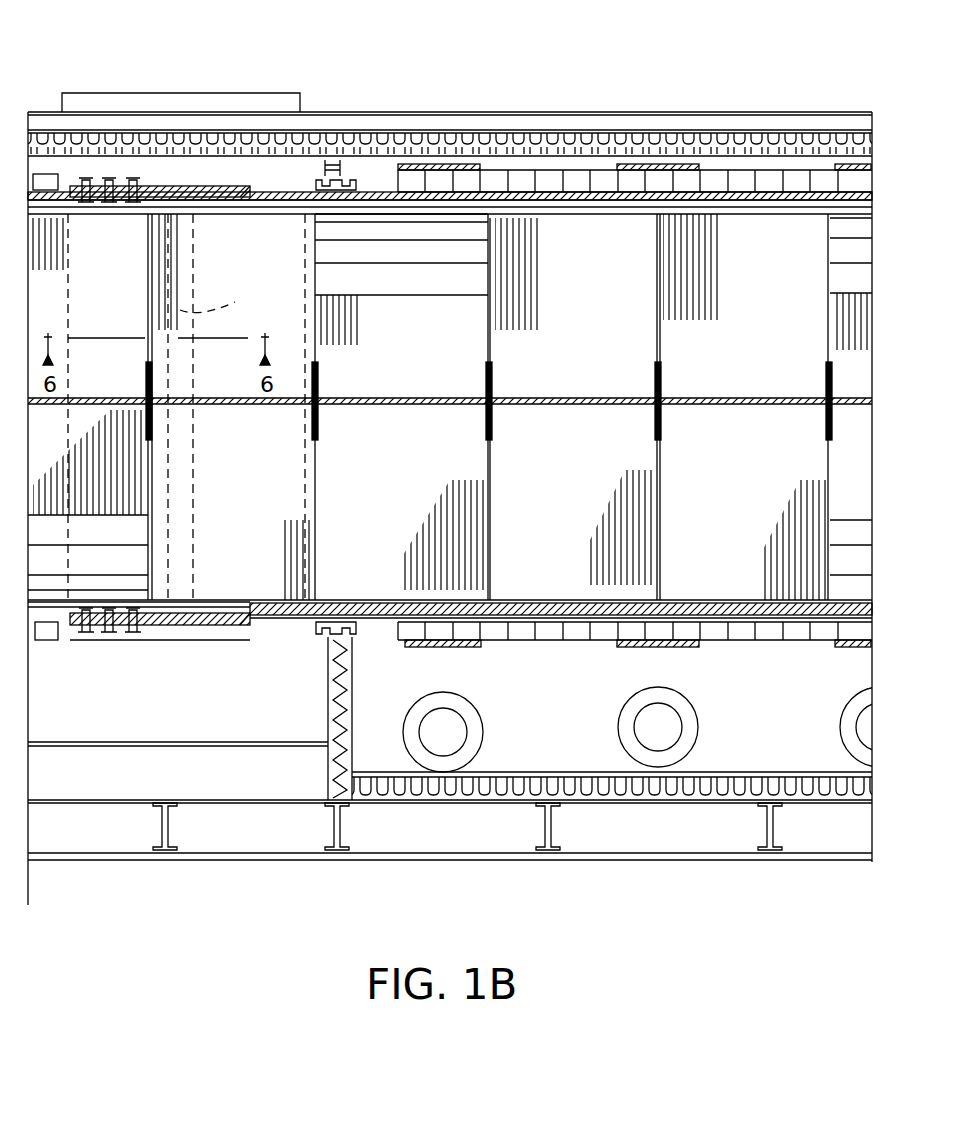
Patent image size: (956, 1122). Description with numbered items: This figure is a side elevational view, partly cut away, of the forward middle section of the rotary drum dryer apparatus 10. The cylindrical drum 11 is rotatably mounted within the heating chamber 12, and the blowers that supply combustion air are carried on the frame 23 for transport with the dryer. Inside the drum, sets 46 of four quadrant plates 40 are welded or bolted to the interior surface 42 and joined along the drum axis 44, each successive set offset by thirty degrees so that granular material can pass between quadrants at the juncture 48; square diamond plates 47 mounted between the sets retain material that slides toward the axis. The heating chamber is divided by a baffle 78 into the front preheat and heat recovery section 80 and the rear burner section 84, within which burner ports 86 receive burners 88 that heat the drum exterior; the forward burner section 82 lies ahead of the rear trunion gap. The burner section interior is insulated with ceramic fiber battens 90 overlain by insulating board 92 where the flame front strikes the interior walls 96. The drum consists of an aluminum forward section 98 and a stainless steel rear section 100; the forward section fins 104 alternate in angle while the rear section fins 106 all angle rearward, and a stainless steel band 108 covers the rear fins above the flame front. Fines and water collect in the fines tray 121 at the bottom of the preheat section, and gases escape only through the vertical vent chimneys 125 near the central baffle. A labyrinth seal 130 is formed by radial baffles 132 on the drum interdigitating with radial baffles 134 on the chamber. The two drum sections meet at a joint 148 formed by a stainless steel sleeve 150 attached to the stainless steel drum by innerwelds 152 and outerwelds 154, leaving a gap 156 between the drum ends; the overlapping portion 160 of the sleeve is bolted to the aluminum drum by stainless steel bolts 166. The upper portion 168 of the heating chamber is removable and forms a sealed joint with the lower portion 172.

The rotary drum dryer apparatus 10 is at (478, 100).
The cylindrical drum 11 is at (723, 192).
The heating chamber 12 is at (585, 112).
The frame 23 is at (635, 862).
The quadrant plate 40 is at (262, 268).
The interior surface 42 is at (448, 202).
The drum axis 44 is at (265, 405).
The set of quadrant plates 46 is at (492, 398).
The square diamond plate 47 is at (145, 370).
The juncture 48 is at (658, 278).
The baffle 78 is at (328, 702).
The preheat and heat recovery section 80 is at (200, 742).
The forward burner section 82 is at (515, 772).
The burner section 84 is at (735, 763).
The burner port 86 is at (483, 731).
The burner 88 is at (445, 708).
The ceramic fiber batten 90 is at (640, 147).
The insulating board 92 is at (388, 772).
The interior wall 96 is at (590, 772).
The forward drum section 98 is at (60, 640).
The rear drum section 100 is at (737, 617).
The forward section fin 104 is at (50, 640).
The rear section fin 106 is at (797, 165).
The band 108 is at (428, 165).
The fines tray 121 is at (195, 745).
The vertical vent chimney 125 is at (312, 92).
The labyrinth seal 130 is at (362, 180).
The drum radial baffle 132 is at (302, 203).
The chamber radial baffle 134 is at (312, 630).
The joint 148 is at (185, 627).
The stainless steel sleeve 150 is at (185, 188).
The innerweld 152 is at (190, 610).
The outerweld 154 is at (282, 592).
The gap 156 is at (229, 297).
The overlapping portion 160 is at (165, 608).
The stainless steel bolt 166 is at (135, 180).
The upper portion of heating chamber 168 is at (105, 178).
The lower portion of heating chamber 172 is at (105, 797).